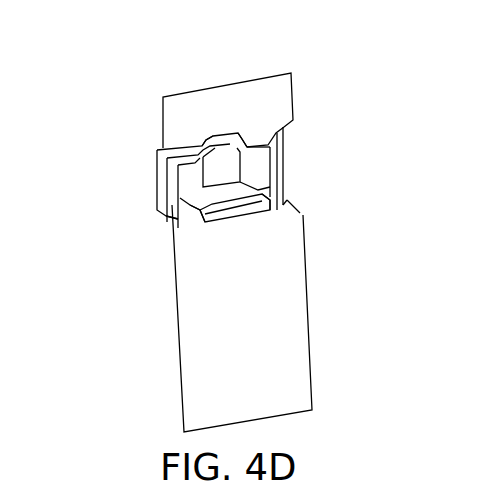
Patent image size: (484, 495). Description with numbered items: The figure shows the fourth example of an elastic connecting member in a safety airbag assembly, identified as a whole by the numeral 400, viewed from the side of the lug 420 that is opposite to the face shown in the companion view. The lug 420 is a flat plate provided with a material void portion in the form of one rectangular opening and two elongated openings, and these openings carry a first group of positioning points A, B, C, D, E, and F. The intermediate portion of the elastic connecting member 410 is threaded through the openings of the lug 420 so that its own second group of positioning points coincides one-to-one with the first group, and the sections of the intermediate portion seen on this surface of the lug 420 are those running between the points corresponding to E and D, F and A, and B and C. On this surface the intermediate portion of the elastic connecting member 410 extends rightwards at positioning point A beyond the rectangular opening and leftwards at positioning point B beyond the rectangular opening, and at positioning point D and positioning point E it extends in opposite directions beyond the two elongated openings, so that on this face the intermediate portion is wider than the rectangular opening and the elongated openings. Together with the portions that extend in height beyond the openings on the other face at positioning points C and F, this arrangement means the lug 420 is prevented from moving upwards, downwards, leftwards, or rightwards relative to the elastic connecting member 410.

The electronic device assembly 400 is at (326, 45).
The elastic connecting member 410 is at (272, 170).
The lug 420 is at (205, 345).
The positioning point A is at (243, 140).
The positioning point B is at (207, 143).
The positioning point C is at (178, 218).
The positioning point D is at (198, 218).
The positioning point E is at (270, 210).
The positioning point F is at (285, 210).